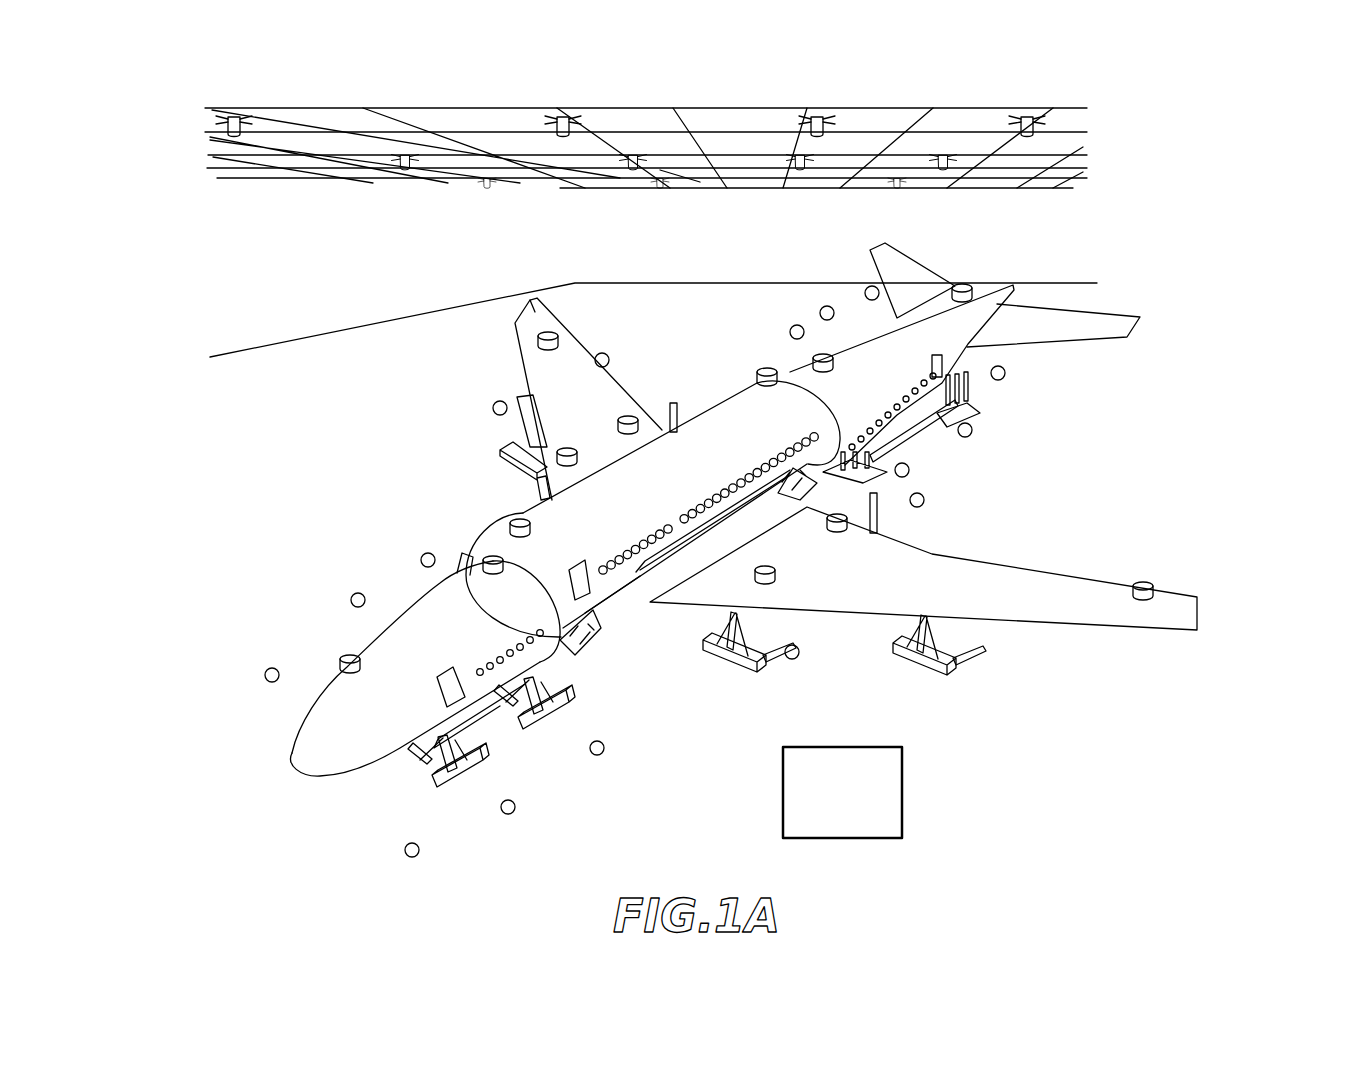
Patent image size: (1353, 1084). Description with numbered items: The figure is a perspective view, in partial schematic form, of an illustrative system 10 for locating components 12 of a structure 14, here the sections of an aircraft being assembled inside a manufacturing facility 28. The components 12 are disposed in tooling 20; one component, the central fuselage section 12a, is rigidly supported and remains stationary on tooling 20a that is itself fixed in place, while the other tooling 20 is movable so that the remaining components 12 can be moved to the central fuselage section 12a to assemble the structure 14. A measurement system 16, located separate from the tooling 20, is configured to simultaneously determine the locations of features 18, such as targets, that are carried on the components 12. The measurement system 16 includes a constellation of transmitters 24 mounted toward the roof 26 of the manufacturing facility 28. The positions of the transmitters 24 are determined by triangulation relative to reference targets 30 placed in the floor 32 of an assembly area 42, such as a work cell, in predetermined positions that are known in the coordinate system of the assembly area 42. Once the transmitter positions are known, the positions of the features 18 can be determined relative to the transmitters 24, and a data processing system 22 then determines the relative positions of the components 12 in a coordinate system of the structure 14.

The system 10 is at (297, 400).
The components 12 is at (521, 318).
The central fuselage section 12a is at (609, 598).
The structure 14 is at (234, 530).
The measurement system 16 is at (172, 326).
The features 18 is at (552, 336).
The tooling 20 is at (502, 457).
The tooling 20a is at (795, 482).
The data processing system 22 is at (902, 773).
The transmitters 24 is at (572, 124).
The roof 26 is at (182, 160).
The manufacturing facility 28 is at (1283, 246).
The reference targets 30 is at (496, 404).
The floor 32 is at (1046, 840).
The assembly area 42 is at (150, 795).